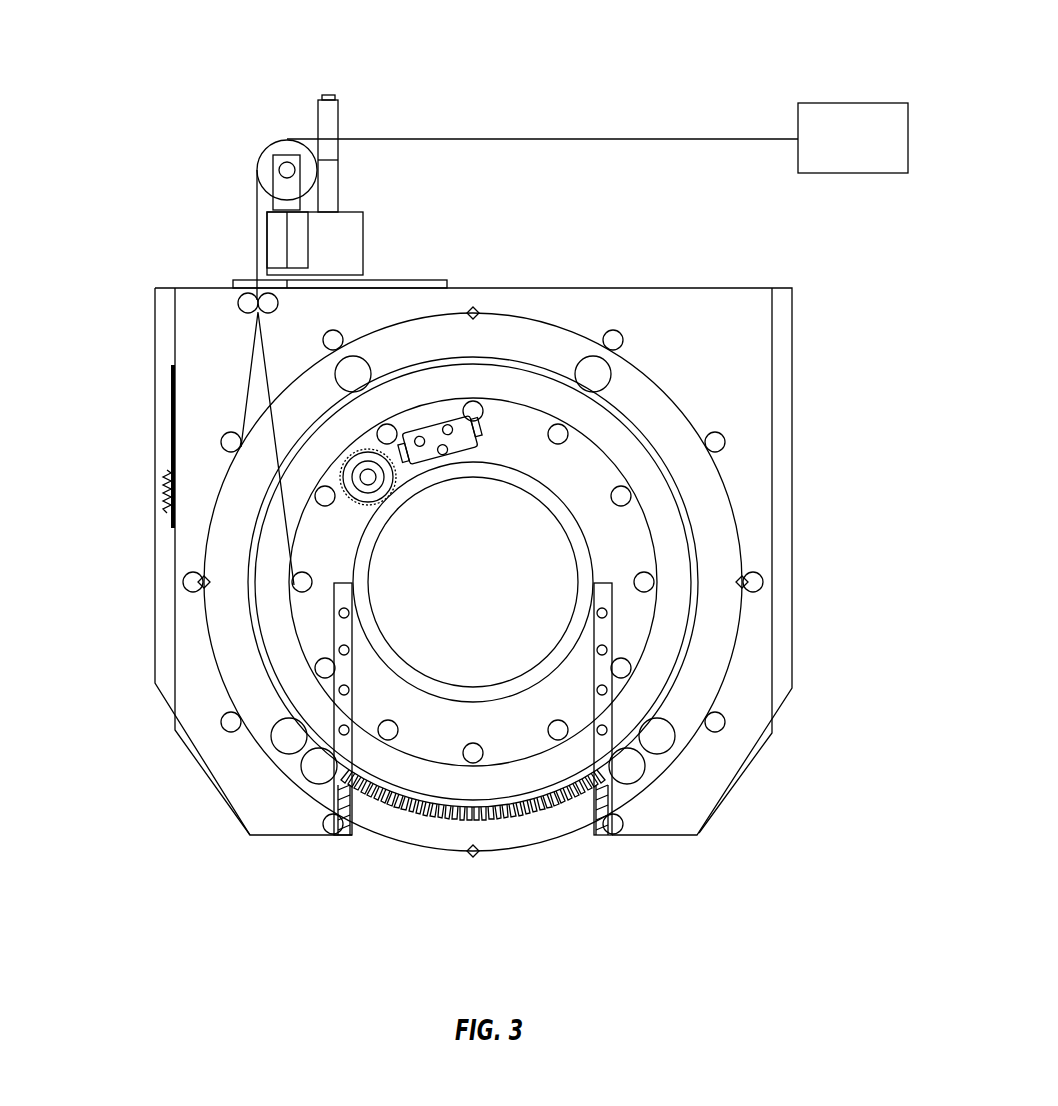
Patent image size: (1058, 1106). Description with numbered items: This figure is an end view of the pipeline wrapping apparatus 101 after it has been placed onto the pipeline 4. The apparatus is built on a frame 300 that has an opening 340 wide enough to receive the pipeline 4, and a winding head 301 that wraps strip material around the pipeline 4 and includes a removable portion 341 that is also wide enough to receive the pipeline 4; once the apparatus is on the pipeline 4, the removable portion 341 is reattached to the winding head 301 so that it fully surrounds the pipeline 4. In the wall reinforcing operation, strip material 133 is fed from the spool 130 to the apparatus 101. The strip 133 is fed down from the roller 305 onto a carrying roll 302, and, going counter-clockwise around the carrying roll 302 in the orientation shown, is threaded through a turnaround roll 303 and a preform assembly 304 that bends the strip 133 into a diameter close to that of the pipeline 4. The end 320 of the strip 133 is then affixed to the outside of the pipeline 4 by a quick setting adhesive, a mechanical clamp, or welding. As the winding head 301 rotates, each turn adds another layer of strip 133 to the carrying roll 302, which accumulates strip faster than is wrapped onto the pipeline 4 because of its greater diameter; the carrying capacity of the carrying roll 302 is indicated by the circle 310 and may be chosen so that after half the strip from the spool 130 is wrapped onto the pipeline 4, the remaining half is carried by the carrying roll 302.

The pipeline wrapping apparatus 101 is at (802, 61).
The spool 130 is at (862, 103).
The strip material 133 is at (645, 138).
The frame 300 is at (750, 768).
The winding head 301 is at (408, 807).
The carrying roll 302 is at (627, 460).
The turnaround roll 303 is at (372, 450).
The preform assembly 304 is at (440, 422).
The roller 305 is at (267, 142).
The carrying capacity 310 is at (188, 535).
The end of the strip 320 is at (593, 486).
The opening 340 is at (583, 836).
The removable portion 341 is at (335, 714).
The pipeline 4 is at (583, 577).